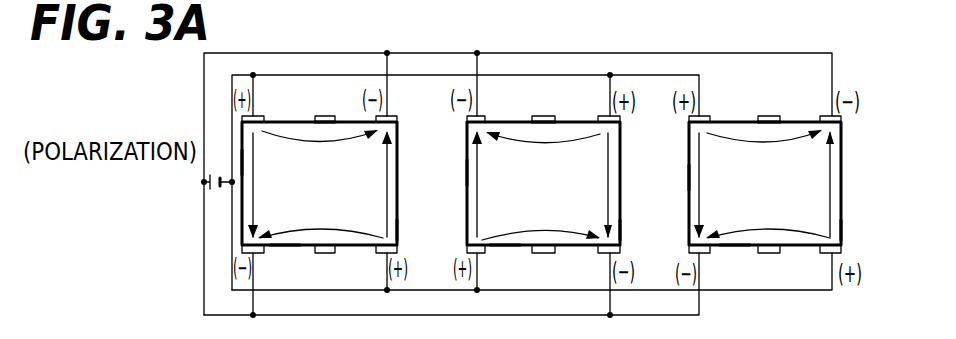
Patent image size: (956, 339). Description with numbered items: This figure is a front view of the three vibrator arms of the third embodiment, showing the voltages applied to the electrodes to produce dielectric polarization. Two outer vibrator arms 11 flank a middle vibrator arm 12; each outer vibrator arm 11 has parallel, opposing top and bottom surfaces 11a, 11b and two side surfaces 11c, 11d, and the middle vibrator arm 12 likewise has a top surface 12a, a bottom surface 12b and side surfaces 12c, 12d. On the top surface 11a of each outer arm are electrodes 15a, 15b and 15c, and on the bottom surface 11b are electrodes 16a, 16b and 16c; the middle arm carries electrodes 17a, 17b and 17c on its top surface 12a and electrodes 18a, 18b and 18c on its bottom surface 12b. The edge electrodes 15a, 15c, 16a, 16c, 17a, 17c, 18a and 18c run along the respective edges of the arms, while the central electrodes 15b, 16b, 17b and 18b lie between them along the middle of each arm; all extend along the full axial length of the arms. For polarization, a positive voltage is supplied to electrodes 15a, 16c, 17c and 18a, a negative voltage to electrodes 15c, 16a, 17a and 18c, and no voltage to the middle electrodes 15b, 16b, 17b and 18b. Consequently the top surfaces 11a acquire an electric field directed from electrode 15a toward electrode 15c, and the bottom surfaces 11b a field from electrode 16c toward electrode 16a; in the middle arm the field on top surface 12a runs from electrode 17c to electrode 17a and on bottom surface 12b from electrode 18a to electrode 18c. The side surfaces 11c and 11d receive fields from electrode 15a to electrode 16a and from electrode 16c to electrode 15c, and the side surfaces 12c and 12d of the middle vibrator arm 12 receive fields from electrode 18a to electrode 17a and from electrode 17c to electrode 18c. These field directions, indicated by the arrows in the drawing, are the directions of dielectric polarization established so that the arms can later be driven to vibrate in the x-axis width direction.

The outer vibrator arm 11 is at (397, 152).
The top surface of outer vibrator arm 11a is at (348, 122).
The bottom surface of outer vibrator arm 11b is at (282, 250).
The side surface of outer vibrator arm 11c is at (242, 160).
The side surface of outer vibrator arm 11d is at (397, 232).
The middle vibrator arm 12 is at (620, 155).
The top surface of middle vibrator arm 12a is at (567, 122).
The bottom surface of middle vibrator arm 12b is at (488, 254).
The side surface of middle vibrator arm 12c is at (467, 176).
The side surface of middle vibrator arm 12d is at (620, 232).
The electrode 15a is at (243, 117).
The electrode 15b is at (315, 118).
The electrode 15c is at (408, 104).
The electrode 16a is at (243, 249).
The electrode 16b is at (312, 254).
The electrode 16c is at (372, 252).
The electrode 17a is at (466, 118).
The electrode 17b is at (532, 118).
The electrode 17c is at (620, 118).
The electrode 18a is at (475, 253).
The electrode 18b is at (543, 254).
The electrode 18c is at (598, 253).